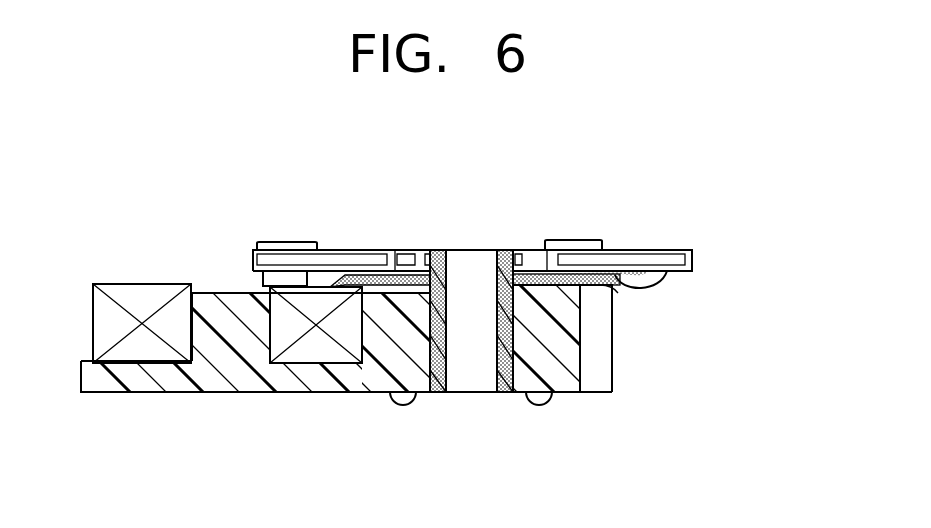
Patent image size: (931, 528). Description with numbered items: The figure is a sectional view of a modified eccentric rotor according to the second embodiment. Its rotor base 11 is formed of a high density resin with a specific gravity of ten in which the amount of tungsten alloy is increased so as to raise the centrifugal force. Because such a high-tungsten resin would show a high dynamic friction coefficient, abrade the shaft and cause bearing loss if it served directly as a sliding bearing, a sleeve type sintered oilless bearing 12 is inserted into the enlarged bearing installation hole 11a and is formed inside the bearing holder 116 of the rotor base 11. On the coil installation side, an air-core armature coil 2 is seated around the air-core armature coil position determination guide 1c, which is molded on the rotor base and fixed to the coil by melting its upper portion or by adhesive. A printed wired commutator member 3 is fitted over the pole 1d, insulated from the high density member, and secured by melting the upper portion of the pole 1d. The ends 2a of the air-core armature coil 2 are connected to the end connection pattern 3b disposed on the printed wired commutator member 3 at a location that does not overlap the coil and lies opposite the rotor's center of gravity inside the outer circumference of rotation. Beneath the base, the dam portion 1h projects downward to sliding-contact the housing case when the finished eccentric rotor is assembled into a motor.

The air-core armature coil 2 is at (143, 290).
The air-core armature coil position determination guide 1c is at (233, 302).
The pole 1d is at (288, 273).
The sleeve type sintered oilless bearing 12 is at (445, 267).
The printed wired commutator member 3 is at (685, 258).
The end connection pattern 3b is at (665, 273).
The ends of the air-core armature coil 2a is at (617, 292).
The rotor base 11 is at (217, 365).
The bearing holder 116 is at (400, 317).
The dam portion 1h is at (405, 400).
The bearing installation hole 11a is at (505, 375).